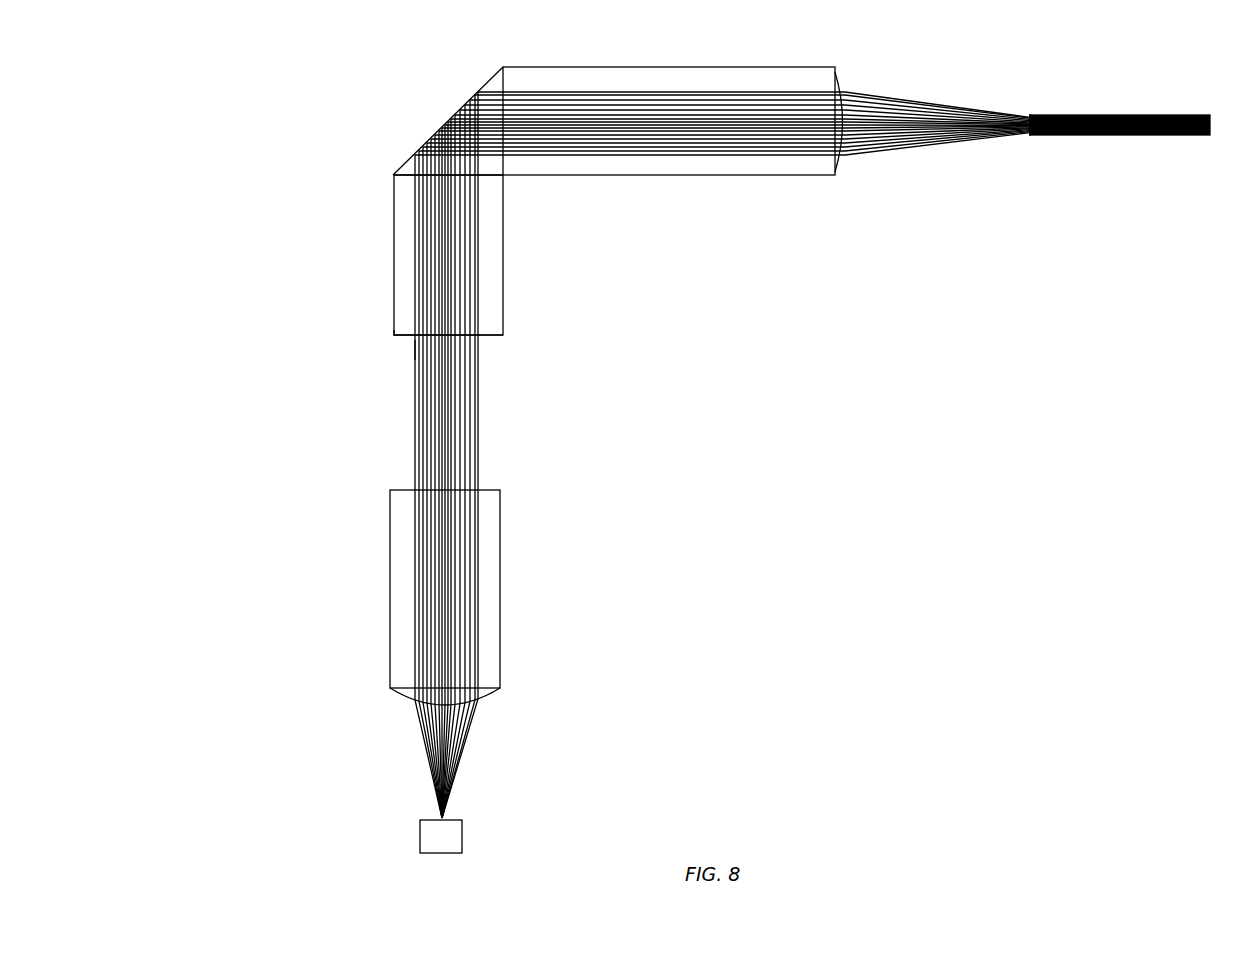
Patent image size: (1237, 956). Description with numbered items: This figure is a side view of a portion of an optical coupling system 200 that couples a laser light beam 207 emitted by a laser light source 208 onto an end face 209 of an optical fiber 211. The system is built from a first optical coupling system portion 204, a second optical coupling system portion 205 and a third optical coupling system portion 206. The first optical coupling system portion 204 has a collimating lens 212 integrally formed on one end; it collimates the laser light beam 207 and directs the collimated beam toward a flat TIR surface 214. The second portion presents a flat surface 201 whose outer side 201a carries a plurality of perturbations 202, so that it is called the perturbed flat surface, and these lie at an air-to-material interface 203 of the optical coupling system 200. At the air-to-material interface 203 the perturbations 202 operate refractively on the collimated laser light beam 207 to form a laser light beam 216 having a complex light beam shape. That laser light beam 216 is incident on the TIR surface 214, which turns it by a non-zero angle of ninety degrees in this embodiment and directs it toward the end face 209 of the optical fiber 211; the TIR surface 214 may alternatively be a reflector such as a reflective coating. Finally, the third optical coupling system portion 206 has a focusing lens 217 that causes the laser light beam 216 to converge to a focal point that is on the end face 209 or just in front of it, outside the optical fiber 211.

The optical coupling system 200 is at (292, 147).
The flat surface 201 is at (492, 340).
The outer side 201a is at (398, 345).
The perturbations 202 is at (415, 345).
The air-to-material interface 203 is at (411, 364).
The first optical coupling system portion 204 is at (503, 600).
The second optical coupling system portion 205 is at (503, 268).
The third optical coupling system portion 206 is at (578, 66).
The laser light beam 207 is at (414, 570).
The laser light source 208 is at (427, 818).
The end face 209 is at (1030, 134).
The optical fiber 211 is at (1128, 113).
The collimating lens 212 is at (487, 700).
The flat TIR surface 214 is at (482, 84).
The laser light beam having complex light beam shape 216 is at (418, 240).
The focusing lens 217 is at (848, 86).